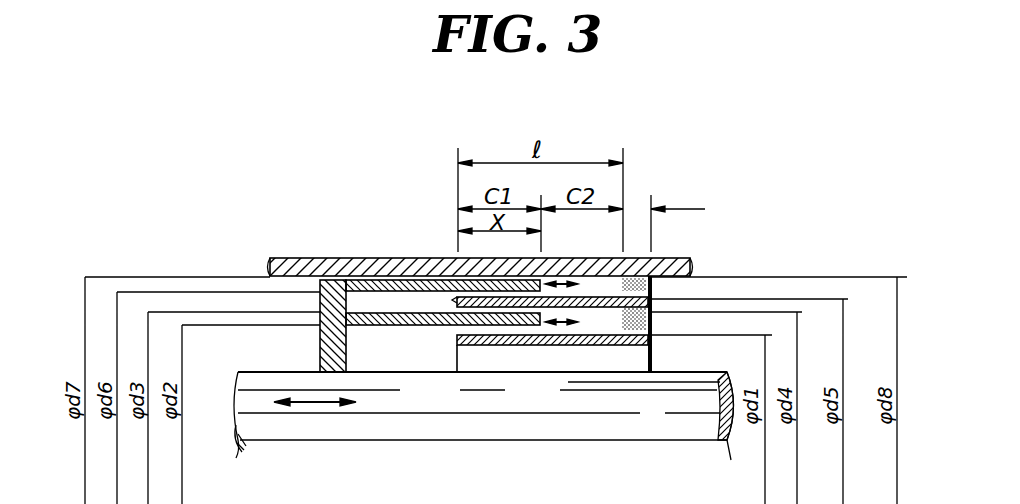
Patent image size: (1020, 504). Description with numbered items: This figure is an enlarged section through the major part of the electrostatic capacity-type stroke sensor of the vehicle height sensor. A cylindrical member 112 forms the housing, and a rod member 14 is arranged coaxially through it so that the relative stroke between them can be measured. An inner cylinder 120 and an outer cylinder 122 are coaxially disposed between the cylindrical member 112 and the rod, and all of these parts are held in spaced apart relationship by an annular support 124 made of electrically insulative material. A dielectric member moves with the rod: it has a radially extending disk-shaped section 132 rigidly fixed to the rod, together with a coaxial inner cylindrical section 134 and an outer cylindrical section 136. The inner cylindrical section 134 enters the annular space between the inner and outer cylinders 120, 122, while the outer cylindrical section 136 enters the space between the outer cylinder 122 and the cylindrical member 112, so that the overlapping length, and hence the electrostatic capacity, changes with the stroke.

The shaft 14 is at (647, 398).
The cylindrical member 112 is at (306, 258).
The inner cylinder 120 is at (545, 345).
The outer cylinder 122 is at (452, 301).
The annular support 124 is at (656, 258).
The disk-shaped section 132 is at (337, 303).
The inner cylindrical section 134 is at (388, 313).
The outer cylindrical section 136 is at (430, 313).